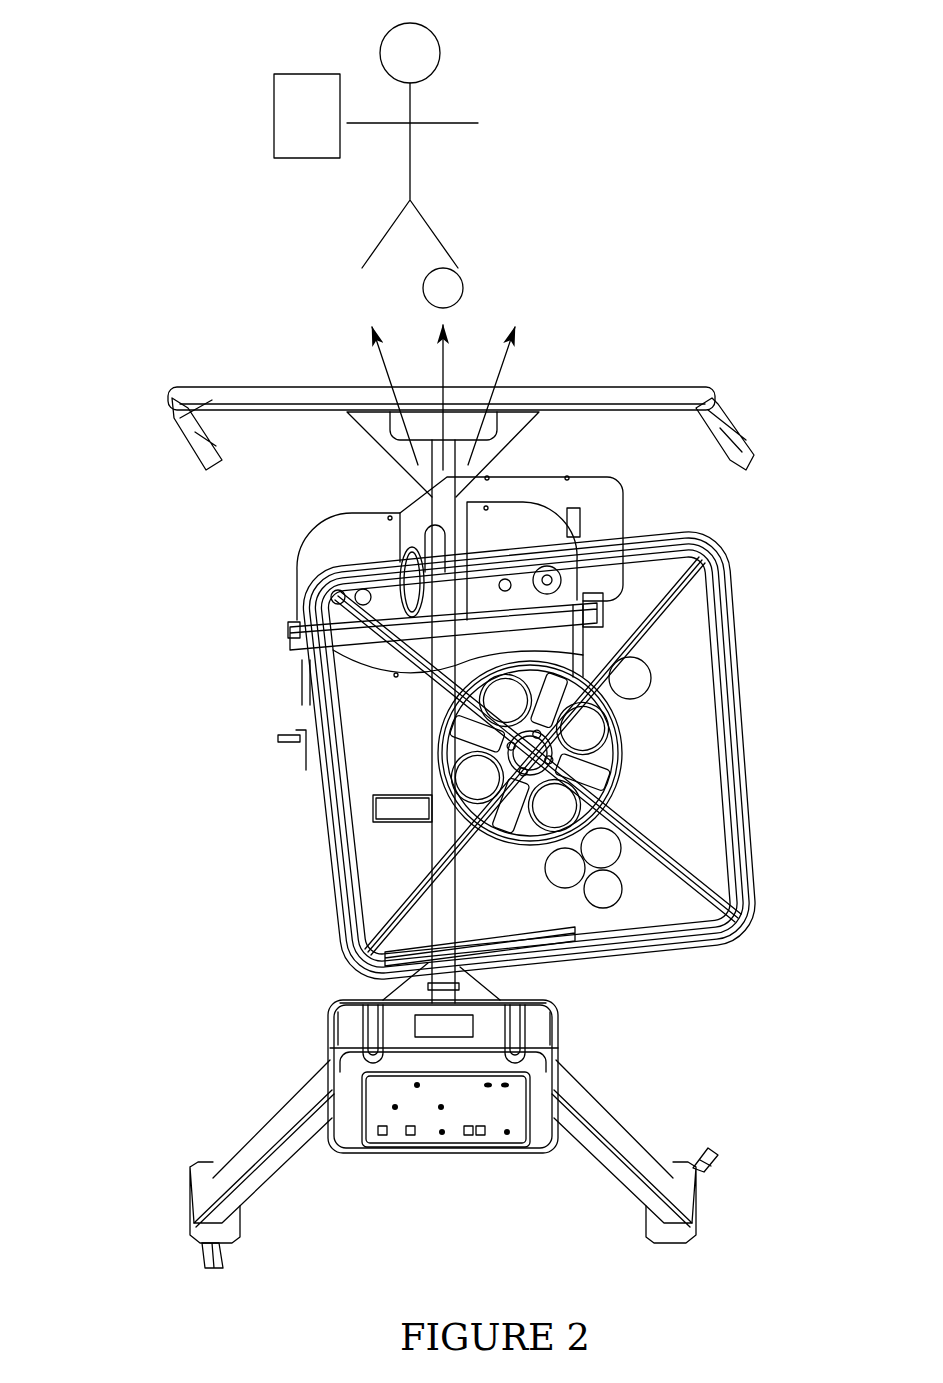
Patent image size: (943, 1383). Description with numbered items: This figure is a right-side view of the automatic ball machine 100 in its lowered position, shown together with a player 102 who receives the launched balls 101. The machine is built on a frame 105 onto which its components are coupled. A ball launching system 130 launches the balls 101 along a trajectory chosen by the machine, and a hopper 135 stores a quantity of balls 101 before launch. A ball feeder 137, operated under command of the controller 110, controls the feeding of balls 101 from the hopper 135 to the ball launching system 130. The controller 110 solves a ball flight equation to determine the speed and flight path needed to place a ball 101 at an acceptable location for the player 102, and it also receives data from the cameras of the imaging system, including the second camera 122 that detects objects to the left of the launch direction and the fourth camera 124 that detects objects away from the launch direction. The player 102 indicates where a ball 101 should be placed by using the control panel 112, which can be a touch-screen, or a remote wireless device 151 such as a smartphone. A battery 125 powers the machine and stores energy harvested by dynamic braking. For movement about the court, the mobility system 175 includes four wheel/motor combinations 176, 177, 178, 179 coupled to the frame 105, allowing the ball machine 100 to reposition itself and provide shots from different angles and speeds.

The automatic ball machine 100 is at (124, 44).
The ball 101 is at (462, 279).
The player 102 is at (458, 82).
The frame 105 is at (360, 342).
The controller 110 is at (444, 1106).
The control panel 112 is at (456, 1156).
The second camera 122 is at (403, 795).
The fourth camera 124 is at (525, 1008).
The battery 125 is at (415, 1018).
The ball launching system 130 is at (292, 554).
The hopper 135 is at (736, 818).
The ball feeder 137 is at (604, 750).
The remote wireless device 151 is at (283, 121).
The mobility system 175 is at (490, 830).
The wheel/motor combination 176 is at (700, 1195).
The wheel/motor combination 177 is at (217, 1268).
The wheel/motor combination 178 is at (706, 388).
The wheel/motor combination 179 is at (180, 388).